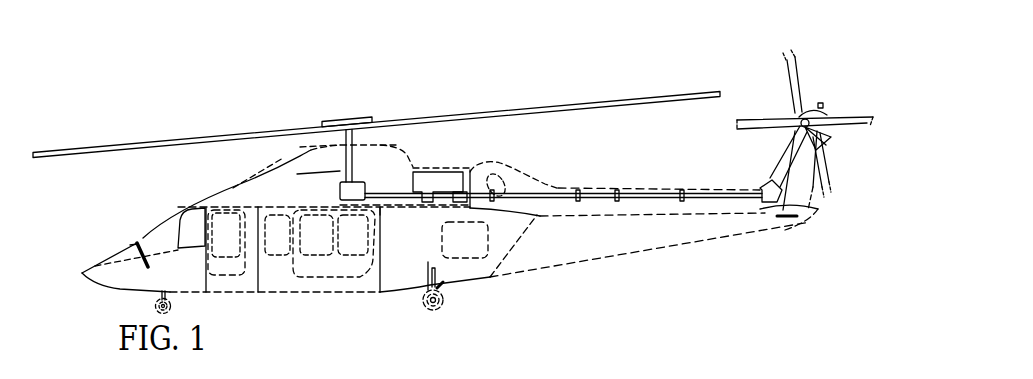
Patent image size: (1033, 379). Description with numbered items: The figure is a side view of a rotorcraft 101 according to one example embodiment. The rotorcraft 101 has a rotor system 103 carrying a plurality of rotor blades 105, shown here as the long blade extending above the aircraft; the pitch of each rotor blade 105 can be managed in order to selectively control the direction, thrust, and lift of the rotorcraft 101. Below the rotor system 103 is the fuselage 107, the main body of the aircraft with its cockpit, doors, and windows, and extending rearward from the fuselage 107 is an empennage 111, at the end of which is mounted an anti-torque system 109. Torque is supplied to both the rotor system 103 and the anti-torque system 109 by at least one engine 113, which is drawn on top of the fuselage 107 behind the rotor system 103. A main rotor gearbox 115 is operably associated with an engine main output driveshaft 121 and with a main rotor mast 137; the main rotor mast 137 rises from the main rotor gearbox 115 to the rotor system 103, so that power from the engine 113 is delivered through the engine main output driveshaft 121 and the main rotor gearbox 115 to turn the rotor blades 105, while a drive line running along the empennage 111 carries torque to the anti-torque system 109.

The rotorcraft 101 is at (289, 66).
The rotor system 103 is at (365, 104).
The rotor blade 105 is at (603, 101).
The fuselage 107 is at (313, 293).
The anti-torque system 109 is at (828, 98).
The empennage 111 is at (697, 246).
The engine 113 is at (470, 176).
The main rotor gearbox 115 is at (340, 193).
The engine main output driveshaft 121 is at (403, 208).
The main rotor mast 137 is at (345, 142).